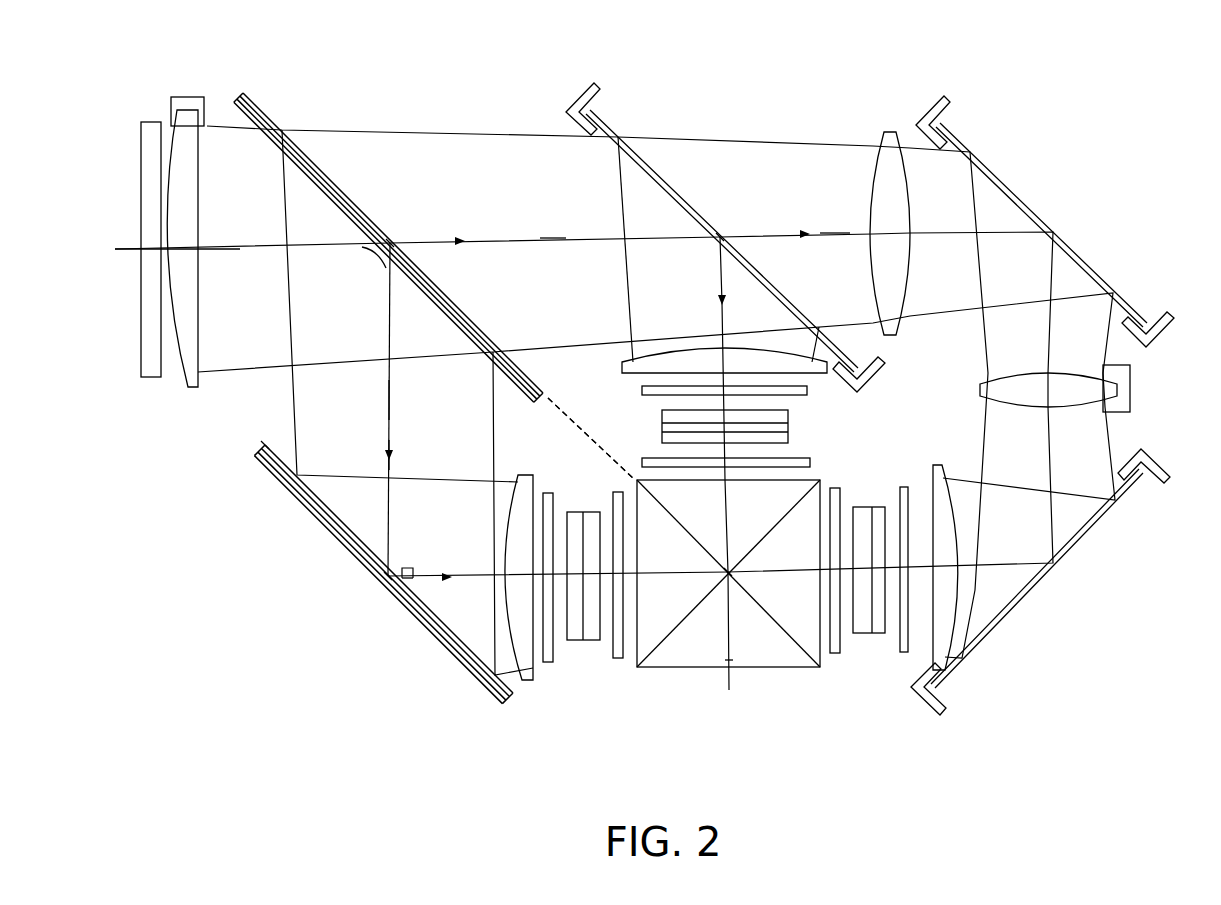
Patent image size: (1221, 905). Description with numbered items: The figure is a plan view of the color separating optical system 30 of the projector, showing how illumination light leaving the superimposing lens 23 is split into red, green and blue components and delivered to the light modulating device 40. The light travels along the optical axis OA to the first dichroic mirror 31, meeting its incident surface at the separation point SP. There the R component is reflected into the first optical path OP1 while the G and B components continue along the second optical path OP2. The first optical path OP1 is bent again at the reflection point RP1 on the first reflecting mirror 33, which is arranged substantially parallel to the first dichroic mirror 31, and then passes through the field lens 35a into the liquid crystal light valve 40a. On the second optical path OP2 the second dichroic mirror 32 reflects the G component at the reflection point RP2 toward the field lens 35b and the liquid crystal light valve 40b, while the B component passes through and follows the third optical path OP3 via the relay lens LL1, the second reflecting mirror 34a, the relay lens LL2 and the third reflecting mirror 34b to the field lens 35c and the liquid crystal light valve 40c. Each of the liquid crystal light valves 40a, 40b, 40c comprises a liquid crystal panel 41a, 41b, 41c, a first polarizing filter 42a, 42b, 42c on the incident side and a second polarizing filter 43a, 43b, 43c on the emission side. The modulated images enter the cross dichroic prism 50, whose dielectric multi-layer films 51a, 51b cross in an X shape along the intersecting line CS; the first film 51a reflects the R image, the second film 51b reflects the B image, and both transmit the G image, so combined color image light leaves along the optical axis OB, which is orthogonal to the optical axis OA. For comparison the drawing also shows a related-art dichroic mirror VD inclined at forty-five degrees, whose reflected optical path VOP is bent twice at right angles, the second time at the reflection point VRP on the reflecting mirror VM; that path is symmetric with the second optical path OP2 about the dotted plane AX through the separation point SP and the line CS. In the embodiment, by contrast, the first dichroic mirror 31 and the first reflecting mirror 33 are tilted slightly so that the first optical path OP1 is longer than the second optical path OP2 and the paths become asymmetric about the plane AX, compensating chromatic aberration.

The superimposing lens 23 is at (188, 387).
The color separating optical system 30 is at (656, 414).
The first dichroic mirror 31 is at (257, 105).
The second dichroic mirror 32 is at (602, 118).
The first reflecting mirror 33 is at (278, 483).
The second reflecting mirror 34a is at (1017, 187).
The third reflecting mirror 34b is at (1025, 600).
The field lens 35a is at (528, 680).
The field lens 35b is at (622, 370).
The field lens 35c is at (933, 465).
The light modulating device 40 is at (725, 600).
The liquid crystal light valve 40a is at (598, 642).
The liquid crystal light valve 40b is at (731, 431).
The liquid crystal light valve 40c is at (859, 645).
The liquid crystal panel 41a is at (580, 642).
The liquid crystal panel 41b is at (788, 428).
The liquid crystal panel 41c is at (858, 637).
The first polarizing filter 42a is at (552, 667).
The first polarizing filter 42b is at (807, 390).
The first polarizing filter 42c is at (908, 655).
The second polarizing filter 43a is at (627, 660).
The second polarizing filter 43b is at (810, 462).
The second polarizing filter 43c is at (833, 660).
The cross dichroic prism 50 is at (728, 605).
The first dielectric multi-layer film 51a is at (787, 638).
The second dielectric multi-layer film 51b is at (668, 638).
The dichroic mirror VD is at (238, 105).
The optical axis of illumination light OA is at (243, 250).
The separation point SP is at (392, 240).
The first optical path OP1 is at (388, 420).
The second optical path OP2 is at (553, 237).
The third optical path OP3 is at (835, 232).
The reflection point RP1 is at (385, 582).
The reflection point RP2 is at (720, 235).
The reflecting mirror VM is at (265, 445).
The optical path VOP is at (392, 465).
The reflection point VRP is at (432, 555).
The relay lens LL1 is at (872, 130).
The relay lens LL2 is at (1132, 387).
The plane AX is at (557, 405).
The intersecting line CS is at (740, 567).
The optical axis of emission light OB is at (733, 660).